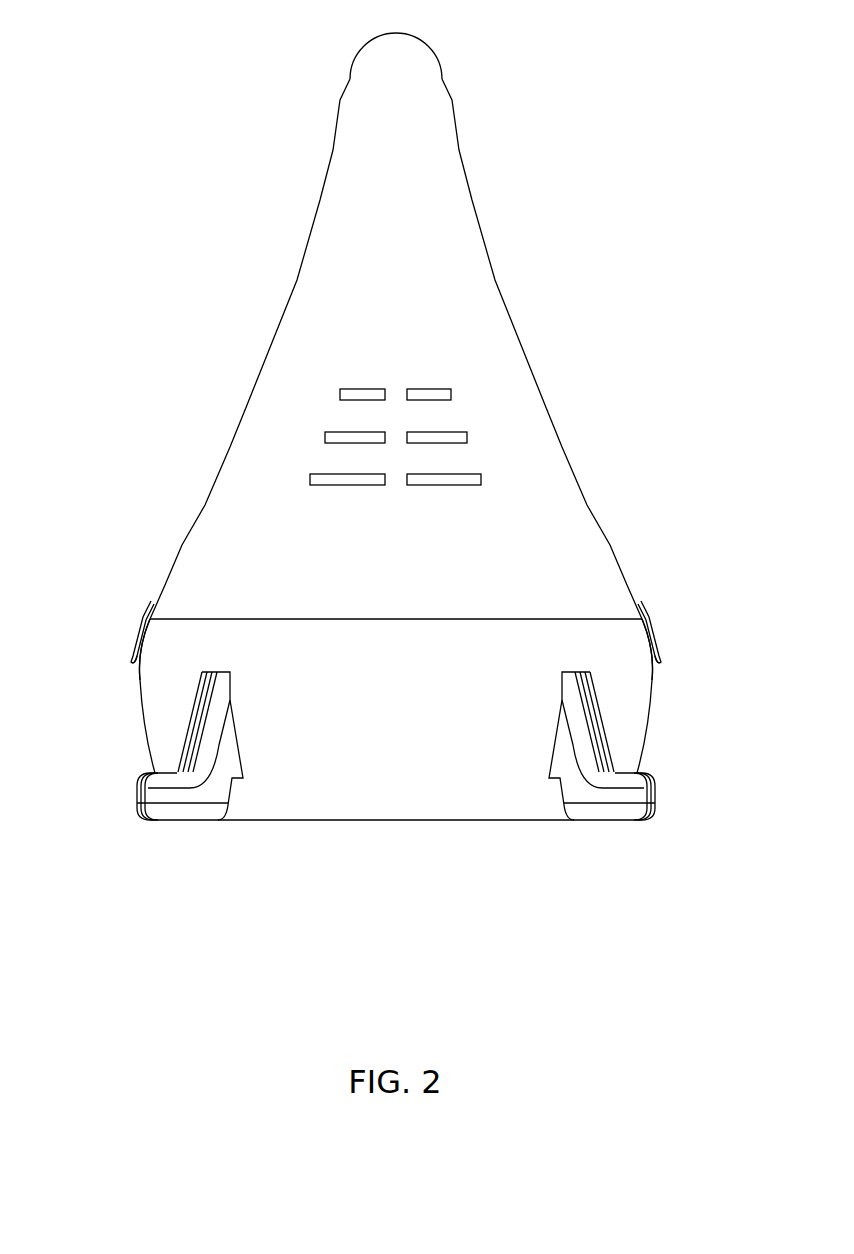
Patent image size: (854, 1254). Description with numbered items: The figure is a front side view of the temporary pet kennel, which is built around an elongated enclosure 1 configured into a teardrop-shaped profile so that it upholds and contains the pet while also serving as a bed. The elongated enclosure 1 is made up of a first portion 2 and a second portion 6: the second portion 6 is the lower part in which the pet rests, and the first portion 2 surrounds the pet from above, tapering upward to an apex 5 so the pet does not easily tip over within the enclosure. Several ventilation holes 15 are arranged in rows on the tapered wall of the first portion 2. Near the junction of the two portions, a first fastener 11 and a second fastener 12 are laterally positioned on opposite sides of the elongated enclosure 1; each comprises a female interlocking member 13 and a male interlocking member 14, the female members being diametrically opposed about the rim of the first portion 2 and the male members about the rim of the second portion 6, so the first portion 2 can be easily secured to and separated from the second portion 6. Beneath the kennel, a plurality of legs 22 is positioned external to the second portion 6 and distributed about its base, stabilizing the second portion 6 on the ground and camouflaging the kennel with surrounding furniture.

The elongated enclosure 1 is at (158, 527).
The first portion 2 is at (527, 388).
The apex 5 is at (395, 40).
The second portion 6 is at (638, 737).
The first fastener 11 is at (677, 645).
The second fastener 12 is at (105, 643).
The female interlocking member 13 is at (134, 660).
The male interlocking member 14 is at (138, 632).
The ventilation hole 15 is at (357, 393).
The plurality of legs 22 is at (138, 795).